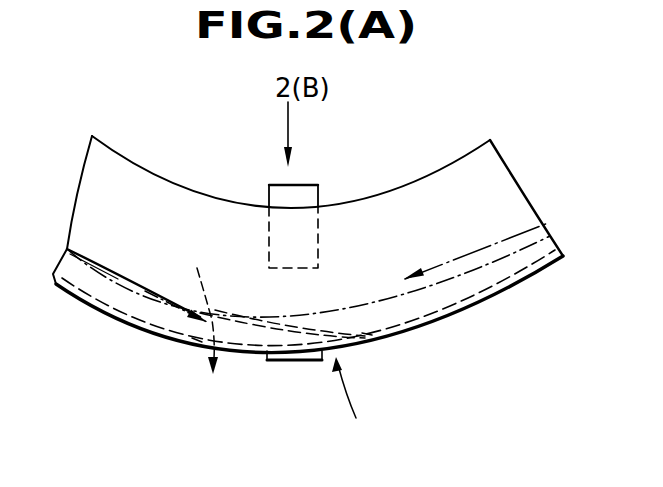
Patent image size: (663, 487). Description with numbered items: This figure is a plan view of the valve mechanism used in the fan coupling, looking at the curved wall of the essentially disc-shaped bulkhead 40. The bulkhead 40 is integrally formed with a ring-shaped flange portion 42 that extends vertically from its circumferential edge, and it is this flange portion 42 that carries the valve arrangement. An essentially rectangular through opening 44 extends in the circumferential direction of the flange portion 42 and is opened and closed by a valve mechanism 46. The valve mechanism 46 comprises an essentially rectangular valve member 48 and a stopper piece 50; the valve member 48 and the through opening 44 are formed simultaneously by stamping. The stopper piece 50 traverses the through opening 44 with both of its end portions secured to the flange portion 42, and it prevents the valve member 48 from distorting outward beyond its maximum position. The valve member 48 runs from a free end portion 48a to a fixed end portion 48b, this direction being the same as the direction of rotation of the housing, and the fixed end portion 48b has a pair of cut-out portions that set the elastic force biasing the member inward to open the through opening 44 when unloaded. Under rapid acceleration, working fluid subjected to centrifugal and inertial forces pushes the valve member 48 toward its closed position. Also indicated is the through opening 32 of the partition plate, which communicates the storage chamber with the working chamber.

The bulkhead 40 is at (454, 177).
The flange portion 42 is at (497, 306).
The through opening 32 is at (318, 185).
The valve member 48 is at (264, 321).
The free end portion 48a is at (198, 307).
The fixed end portion 48b is at (366, 334).
The through opening 44 is at (197, 340).
The stopper piece 50 is at (270, 362).
The valve mechanism 46 is at (358, 401).